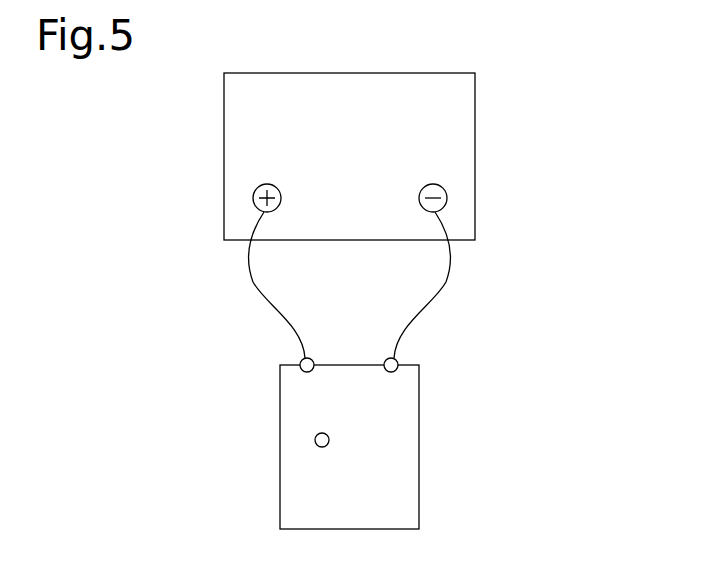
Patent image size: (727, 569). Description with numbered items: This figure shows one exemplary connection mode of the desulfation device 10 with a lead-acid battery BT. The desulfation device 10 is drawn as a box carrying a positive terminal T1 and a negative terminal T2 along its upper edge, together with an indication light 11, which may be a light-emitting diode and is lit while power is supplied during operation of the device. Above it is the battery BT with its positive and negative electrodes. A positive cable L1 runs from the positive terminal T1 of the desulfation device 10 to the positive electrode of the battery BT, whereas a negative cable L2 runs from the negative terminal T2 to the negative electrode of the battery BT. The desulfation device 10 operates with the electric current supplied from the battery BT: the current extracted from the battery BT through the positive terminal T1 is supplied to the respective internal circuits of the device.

The battery BT is at (430, 130).
The positive cable L1 is at (252, 280).
The negative cable L2 is at (435, 293).
The positive terminal T1 is at (300, 360).
The negative terminal T2 is at (398, 360).
The desulfation device 10 is at (390, 462).
The indication light 11 is at (315, 440).